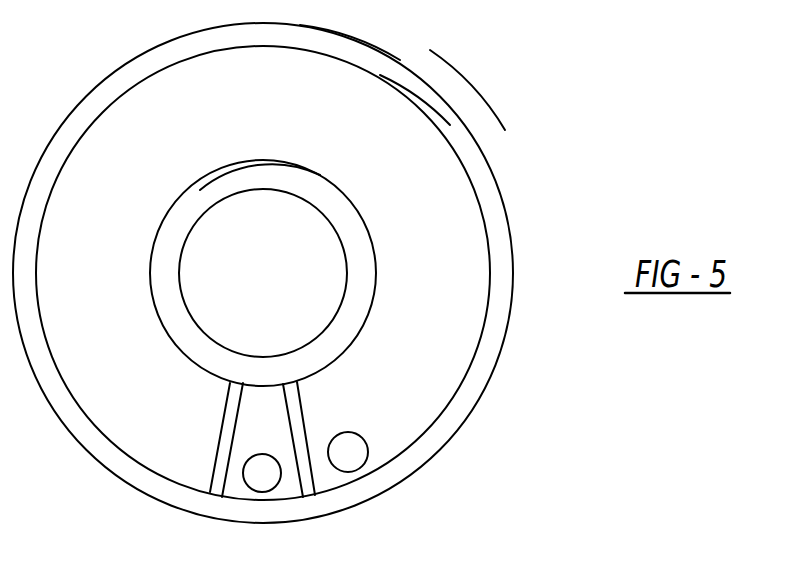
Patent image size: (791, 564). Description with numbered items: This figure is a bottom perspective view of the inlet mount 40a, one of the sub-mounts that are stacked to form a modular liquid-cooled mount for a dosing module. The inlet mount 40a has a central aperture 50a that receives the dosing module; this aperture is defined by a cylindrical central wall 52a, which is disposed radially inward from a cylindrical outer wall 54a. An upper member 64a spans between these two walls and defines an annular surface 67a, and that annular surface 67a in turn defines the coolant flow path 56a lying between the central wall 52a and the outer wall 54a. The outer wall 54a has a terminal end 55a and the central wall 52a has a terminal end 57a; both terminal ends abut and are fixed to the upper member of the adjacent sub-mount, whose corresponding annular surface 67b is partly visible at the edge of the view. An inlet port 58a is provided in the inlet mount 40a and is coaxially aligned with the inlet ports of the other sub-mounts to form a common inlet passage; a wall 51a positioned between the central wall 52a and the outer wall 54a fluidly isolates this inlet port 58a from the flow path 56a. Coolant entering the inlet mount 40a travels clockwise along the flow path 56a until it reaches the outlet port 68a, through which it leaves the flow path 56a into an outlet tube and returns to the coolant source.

The inlet mount 40a is at (522, 369).
The central aperture 50a is at (193, 313).
The wall 51a is at (222, 443).
The cylindrical central wall 52a is at (340, 186).
The cylindrical outer wall 54a is at (503, 200).
The terminal end 55a is at (470, 162).
The coolant flow path 56a is at (113, 271).
The terminal end 57a is at (253, 172).
The inlet port 58a is at (276, 486).
The upper member 64a is at (412, 133).
The annular surface 67a is at (348, 82).
The annular surface 67b is at (544, 558).
The outlet port 68a is at (368, 452).